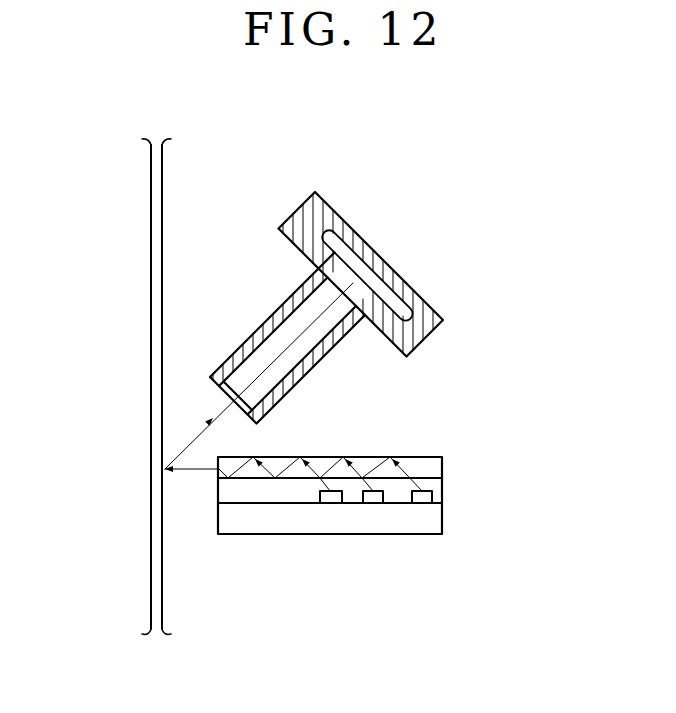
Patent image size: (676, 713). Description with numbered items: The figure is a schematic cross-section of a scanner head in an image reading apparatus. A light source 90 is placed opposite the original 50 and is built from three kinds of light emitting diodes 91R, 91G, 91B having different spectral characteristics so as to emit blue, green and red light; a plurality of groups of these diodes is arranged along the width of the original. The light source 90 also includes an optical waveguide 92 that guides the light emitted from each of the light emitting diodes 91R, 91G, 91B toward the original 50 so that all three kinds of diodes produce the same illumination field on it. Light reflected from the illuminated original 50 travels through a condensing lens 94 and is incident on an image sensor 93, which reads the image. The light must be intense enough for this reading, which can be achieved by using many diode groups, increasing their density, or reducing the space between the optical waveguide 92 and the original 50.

The original 50 is at (151, 330).
The light source 90 is at (396, 516).
The light emitting diode 91R is at (332, 503).
The light emitting diode 91G is at (373, 503).
The light emitting diode 91B is at (422, 503).
The optical waveguide 92 is at (425, 465).
The image sensor 93 is at (358, 264).
The condensing lens 94 is at (287, 372).